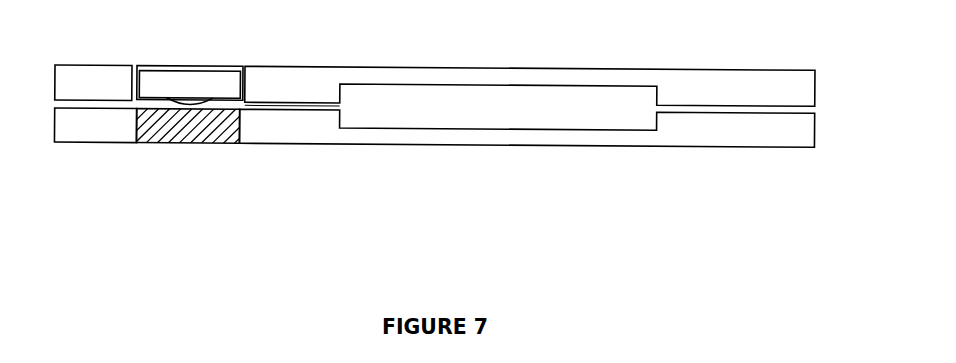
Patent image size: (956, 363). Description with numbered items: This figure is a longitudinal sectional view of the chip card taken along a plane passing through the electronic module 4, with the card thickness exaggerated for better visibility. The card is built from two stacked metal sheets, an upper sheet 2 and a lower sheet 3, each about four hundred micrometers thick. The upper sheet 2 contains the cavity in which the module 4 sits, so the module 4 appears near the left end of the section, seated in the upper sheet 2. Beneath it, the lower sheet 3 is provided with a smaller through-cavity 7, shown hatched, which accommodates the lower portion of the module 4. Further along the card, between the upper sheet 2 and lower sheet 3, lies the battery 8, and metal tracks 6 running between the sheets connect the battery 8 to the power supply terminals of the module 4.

The upper metal sheet 2 is at (752, 78).
The lower metal sheet 3 is at (750, 128).
The electronic module 4 is at (202, 84).
The metal tracks 6 is at (293, 103).
The through-cavity 7 is at (183, 127).
The battery 8 is at (600, 111).